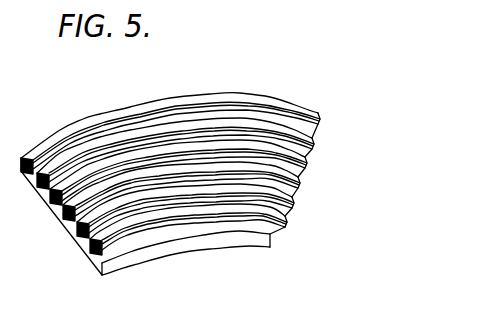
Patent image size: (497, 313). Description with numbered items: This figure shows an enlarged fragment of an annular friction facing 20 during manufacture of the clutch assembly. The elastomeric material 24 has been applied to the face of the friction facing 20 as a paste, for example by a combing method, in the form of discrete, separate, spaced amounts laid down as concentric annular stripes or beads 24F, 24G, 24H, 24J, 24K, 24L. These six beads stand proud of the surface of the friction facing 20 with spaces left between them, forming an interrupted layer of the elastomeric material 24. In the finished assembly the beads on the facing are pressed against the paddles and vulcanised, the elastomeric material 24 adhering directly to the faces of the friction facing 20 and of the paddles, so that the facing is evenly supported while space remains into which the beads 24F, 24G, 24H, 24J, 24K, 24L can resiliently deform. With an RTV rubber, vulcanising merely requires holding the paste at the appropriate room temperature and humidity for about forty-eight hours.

The friction facing 20 is at (241, 232).
The elastomeric material 24 is at (176, 136).
The stripe or bead of elastomeric material 24F is at (276, 217).
The stripe or bead of elastomeric material 24G is at (287, 199).
The stripe or bead of elastomeric material 24H is at (293, 179).
The stripe or bead of elastomeric material 24J is at (294, 161).
The stripe or bead of elastomeric material 24K is at (299, 143).
The stripe or bead of elastomeric material 24L is at (305, 121).